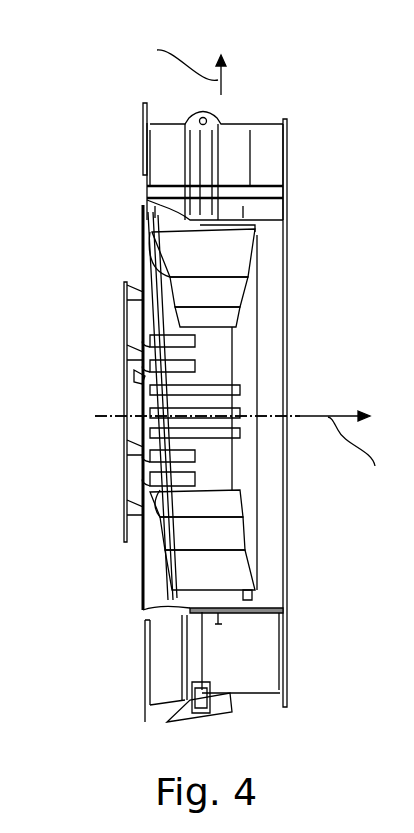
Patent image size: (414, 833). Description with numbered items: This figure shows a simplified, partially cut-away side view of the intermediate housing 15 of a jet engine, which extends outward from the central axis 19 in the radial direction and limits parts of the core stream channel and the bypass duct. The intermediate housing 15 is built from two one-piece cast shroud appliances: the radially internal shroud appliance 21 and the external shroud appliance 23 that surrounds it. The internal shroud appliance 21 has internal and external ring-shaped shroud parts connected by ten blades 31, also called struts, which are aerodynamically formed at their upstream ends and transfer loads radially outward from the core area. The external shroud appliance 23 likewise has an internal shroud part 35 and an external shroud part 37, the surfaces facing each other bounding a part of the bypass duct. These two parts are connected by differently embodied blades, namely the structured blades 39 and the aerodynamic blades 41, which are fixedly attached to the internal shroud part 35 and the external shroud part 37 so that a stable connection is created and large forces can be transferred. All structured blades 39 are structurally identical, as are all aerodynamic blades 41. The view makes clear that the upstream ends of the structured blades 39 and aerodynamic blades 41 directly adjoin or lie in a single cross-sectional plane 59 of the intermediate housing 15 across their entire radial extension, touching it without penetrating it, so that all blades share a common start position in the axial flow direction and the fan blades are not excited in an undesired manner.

The intermediate housing 15 is at (100, 78).
The cross-sectional plane 59 is at (143, 146).
The external shroud part 37 is at (245, 150).
The external shroud appliance 23 is at (302, 142).
The internal shroud appliance 21 is at (110, 292).
The structured blades 39 is at (228, 258).
The aerodynamic blades 41 is at (160, 333).
The internal shroud part 35 is at (218, 358).
The blades 31 is at (134, 376).
The central axis 19 is at (300, 415).